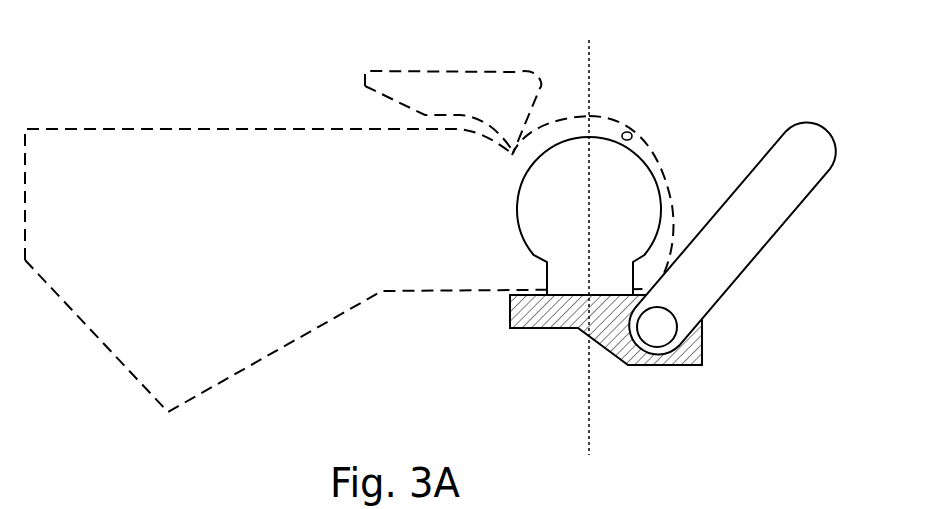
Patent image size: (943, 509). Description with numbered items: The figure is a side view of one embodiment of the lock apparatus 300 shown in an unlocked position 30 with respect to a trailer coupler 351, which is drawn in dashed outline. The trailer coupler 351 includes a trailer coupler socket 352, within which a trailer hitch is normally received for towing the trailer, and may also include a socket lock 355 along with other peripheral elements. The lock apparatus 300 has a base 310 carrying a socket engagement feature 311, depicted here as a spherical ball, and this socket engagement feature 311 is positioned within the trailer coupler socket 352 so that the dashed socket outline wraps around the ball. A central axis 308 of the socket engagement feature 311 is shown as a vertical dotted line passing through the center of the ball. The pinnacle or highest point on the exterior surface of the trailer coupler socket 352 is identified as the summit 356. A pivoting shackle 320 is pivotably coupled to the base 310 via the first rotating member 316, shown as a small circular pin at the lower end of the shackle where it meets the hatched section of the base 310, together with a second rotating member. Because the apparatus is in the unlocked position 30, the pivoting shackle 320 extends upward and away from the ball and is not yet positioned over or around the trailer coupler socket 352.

The unlocked position 30 is at (96, 46).
The lock apparatus 300 is at (745, 404).
The central axis 308 is at (590, 432).
The base 310 is at (555, 322).
The socket engagement feature 311 is at (645, 149).
The first rotating member 316 is at (655, 346).
The pivoting shackle 320 is at (747, 252).
The trailer coupler 351 is at (330, 292).
The trailer coupler socket 352 is at (625, 131).
The socket lock 355 is at (493, 97).
The summit 356 is at (588, 118).